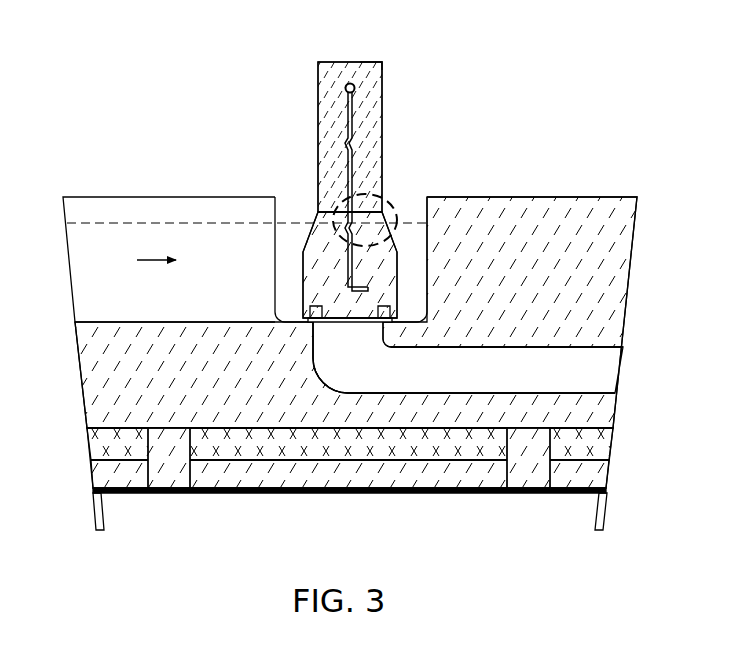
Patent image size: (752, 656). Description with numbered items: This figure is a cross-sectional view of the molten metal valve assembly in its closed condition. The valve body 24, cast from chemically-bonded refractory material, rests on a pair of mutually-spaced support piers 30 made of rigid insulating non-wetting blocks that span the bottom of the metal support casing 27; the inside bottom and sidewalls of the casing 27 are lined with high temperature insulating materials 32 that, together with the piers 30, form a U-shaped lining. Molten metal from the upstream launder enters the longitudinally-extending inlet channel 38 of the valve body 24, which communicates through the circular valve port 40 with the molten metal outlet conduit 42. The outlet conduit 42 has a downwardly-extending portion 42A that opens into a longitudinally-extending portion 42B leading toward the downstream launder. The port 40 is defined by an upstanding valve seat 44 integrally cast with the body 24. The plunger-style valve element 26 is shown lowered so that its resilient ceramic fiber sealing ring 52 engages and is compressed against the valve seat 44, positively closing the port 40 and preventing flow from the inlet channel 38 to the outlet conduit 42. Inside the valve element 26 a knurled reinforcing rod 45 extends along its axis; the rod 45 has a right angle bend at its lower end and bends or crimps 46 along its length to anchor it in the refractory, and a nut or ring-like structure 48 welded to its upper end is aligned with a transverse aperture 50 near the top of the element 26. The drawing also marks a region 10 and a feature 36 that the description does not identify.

The detail region of connection between valve rod and insert 10 is at (392, 200).
The valve body 24 is at (560, 226).
The valve element 26 is at (383, 95).
The support casing 27 is at (434, 500).
The support piers 30 is at (180, 489).
The insulating materials 32 is at (312, 442).
The support legs 36 is at (95, 520).
The molten metal inlet channel 38 is at (148, 306).
The valve port 40 is at (340, 329).
The molten metal outlet conduit 42 is at (484, 364).
The downwardly-extending portion 42A is at (344, 377).
The longitudinally-extending portion 42B is at (522, 387).
The valve seat 44 is at (392, 322).
The reinforcing rod 45 is at (347, 118).
The bends or crimps 46 is at (347, 147).
The nut or ring-like structure 48 is at (345, 86).
The transverse aperture 50 is at (385, 62).
The sealing ring 52 is at (316, 306).